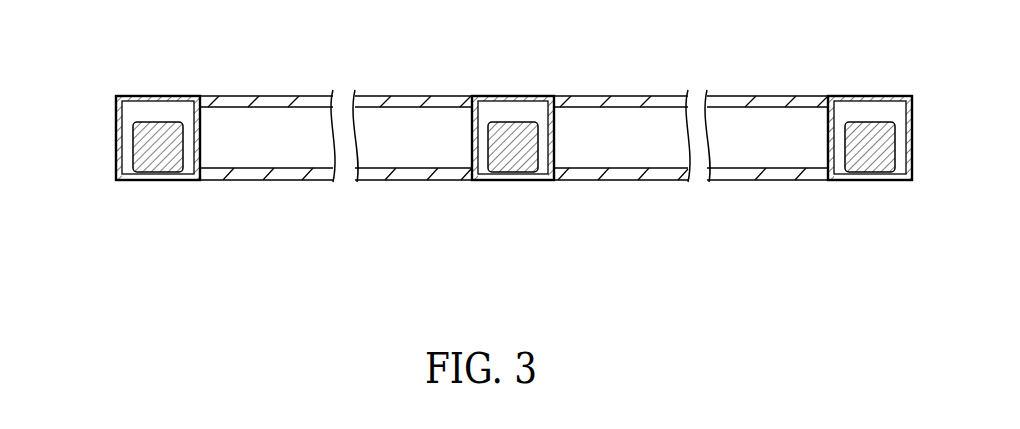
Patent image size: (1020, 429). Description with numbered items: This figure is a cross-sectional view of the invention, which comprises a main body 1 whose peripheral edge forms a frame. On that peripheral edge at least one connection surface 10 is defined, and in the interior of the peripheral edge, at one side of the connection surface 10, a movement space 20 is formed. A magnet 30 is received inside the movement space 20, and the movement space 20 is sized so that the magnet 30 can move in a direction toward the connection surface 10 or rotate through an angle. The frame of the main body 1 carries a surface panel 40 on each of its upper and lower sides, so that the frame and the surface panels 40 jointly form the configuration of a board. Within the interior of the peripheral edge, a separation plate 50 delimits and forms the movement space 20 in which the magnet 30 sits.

The main body 1 is at (110, 110).
The connection surface 10 is at (116, 137).
The movement space 20 is at (177, 110).
The magnet 30 is at (138, 157).
The surface panel 40 is at (285, 98).
The separation plate 50 is at (200, 137).